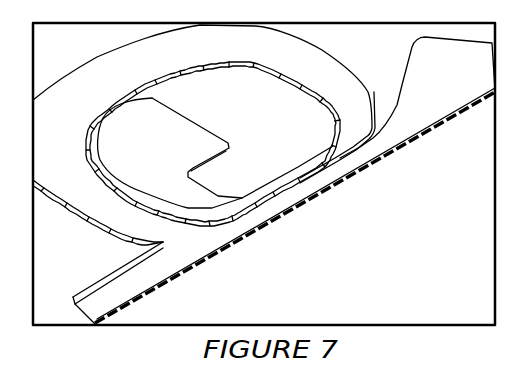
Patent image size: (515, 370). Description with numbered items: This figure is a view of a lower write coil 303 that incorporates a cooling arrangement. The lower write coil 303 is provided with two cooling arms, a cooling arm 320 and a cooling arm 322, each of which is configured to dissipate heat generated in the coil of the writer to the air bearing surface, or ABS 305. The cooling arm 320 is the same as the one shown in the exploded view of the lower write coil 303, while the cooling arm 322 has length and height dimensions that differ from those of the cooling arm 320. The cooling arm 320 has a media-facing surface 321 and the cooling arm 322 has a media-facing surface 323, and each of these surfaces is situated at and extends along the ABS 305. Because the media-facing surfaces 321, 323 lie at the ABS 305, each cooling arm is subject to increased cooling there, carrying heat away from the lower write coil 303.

The lower write coil 303 is at (315, 54).
The ABS 305 is at (290, 212).
The cooling arm 320 is at (133, 276).
The media-facing surface 321 is at (204, 263).
The cooling arm 322 is at (445, 75).
The media-facing surface 323 is at (452, 122).